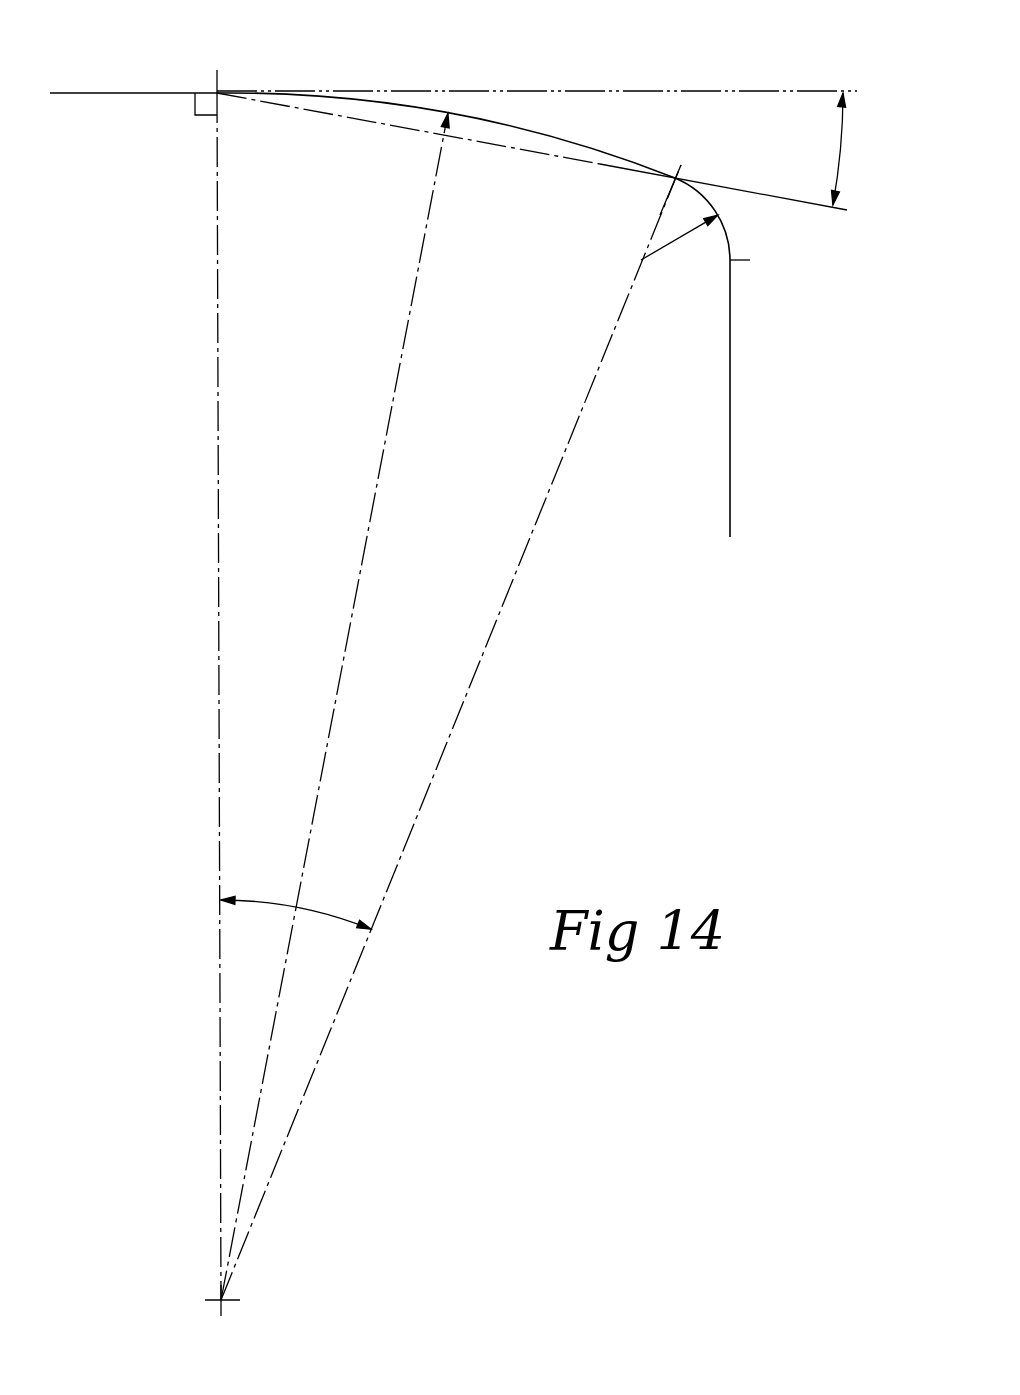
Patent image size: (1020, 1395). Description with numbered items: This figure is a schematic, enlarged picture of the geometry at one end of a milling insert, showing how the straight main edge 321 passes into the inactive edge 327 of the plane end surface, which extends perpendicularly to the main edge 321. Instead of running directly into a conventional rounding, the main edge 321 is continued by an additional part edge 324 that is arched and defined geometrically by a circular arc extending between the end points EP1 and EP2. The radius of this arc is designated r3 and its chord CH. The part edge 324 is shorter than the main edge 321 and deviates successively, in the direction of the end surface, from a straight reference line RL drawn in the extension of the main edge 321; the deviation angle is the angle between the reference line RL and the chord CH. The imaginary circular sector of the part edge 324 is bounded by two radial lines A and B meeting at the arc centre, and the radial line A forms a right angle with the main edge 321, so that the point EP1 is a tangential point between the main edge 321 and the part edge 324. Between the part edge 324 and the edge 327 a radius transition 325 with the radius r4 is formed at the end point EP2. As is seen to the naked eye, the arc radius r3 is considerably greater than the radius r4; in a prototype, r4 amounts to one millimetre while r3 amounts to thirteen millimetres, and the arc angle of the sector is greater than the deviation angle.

The main edge 321 is at (120, 93).
The end point EP1 is at (217, 93).
The reference line RL is at (733, 91).
The radial line A is at (218, 400).
The part edge 324 is at (548, 130).
The chord CH is at (525, 150).
The end point EP2 is at (677, 177).
The radius r3 is at (335, 707).
The radial line B is at (556, 470).
The radius transition 325 is at (722, 222).
The radius r4 is at (679, 238).
The inactive edge 327 is at (730, 343).